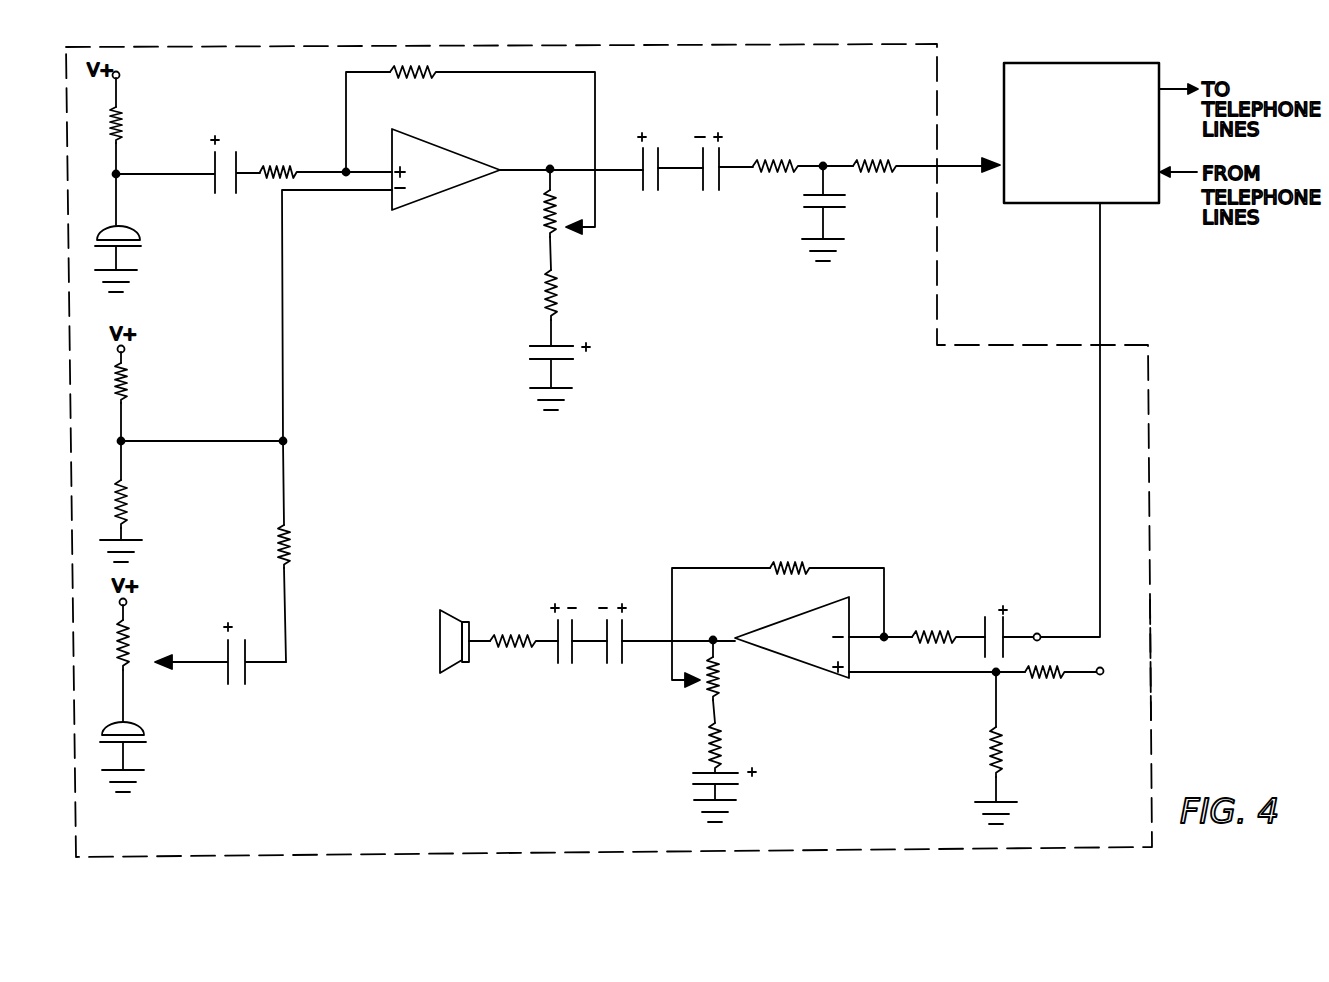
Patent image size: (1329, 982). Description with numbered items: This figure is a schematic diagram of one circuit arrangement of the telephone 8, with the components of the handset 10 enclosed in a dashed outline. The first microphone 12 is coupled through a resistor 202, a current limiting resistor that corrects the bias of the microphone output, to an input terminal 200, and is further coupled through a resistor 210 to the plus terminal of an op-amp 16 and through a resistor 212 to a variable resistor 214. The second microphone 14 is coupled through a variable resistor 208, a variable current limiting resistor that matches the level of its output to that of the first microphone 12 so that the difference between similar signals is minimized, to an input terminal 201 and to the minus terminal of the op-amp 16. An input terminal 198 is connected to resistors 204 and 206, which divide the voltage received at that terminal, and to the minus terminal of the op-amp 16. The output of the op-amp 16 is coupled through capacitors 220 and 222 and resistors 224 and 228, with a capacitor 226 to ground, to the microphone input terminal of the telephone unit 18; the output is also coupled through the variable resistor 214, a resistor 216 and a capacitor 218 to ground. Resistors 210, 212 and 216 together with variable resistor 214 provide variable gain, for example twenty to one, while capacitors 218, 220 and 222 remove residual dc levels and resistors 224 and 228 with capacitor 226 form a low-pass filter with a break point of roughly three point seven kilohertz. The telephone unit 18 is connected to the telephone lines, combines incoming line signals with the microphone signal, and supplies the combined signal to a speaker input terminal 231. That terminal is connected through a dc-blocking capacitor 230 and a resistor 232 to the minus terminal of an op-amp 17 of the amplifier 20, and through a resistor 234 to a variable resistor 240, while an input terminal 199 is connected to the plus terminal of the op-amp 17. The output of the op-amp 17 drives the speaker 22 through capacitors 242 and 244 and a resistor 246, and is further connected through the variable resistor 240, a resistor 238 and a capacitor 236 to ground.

The telephone 8 is at (1165, 665).
The handset 10 is at (1152, 761).
The first microphone 12 is at (137, 232).
The second microphone 14 is at (141, 725).
The op-amp 16 is at (403, 211).
The op-amp 17 is at (810, 656).
The telephone unit 18 is at (1068, 173).
The amplifier 20 is at (738, 545).
The speaker 22 is at (443, 672).
The input terminal 198 is at (125, 350).
The input terminal 199 is at (1101, 676).
The input terminal 200 is at (120, 76).
The input terminal 201 is at (127, 602).
The resistor 202 is at (122, 125).
The resistor 204 is at (127, 393).
The resistor 206 is at (126, 494).
The variable resistor 208 is at (129, 635).
The resistor 210 is at (271, 166).
The resistor 212 is at (430, 70).
The variable resistor 214 is at (545, 232).
The resistor 216 is at (548, 306).
The capacitor 218 is at (530, 360).
The capacitor 220 is at (657, 150).
The capacitor 222 is at (721, 150).
The resistor 224 is at (768, 161).
The capacitor 226 is at (845, 196).
The resistor 228 is at (868, 161).
The capacitor 230 is at (984, 618).
The speaker input terminal 231 is at (1036, 633).
The resistor 232 is at (926, 632).
The resistor 234 is at (776, 562).
The capacitor 236 is at (738, 784).
The resistor 238 is at (721, 741).
The variable resistor 240 is at (721, 681).
The capacitor 242 is at (605, 664).
The capacitor 244 is at (553, 618).
The resistor 246 is at (527, 650).